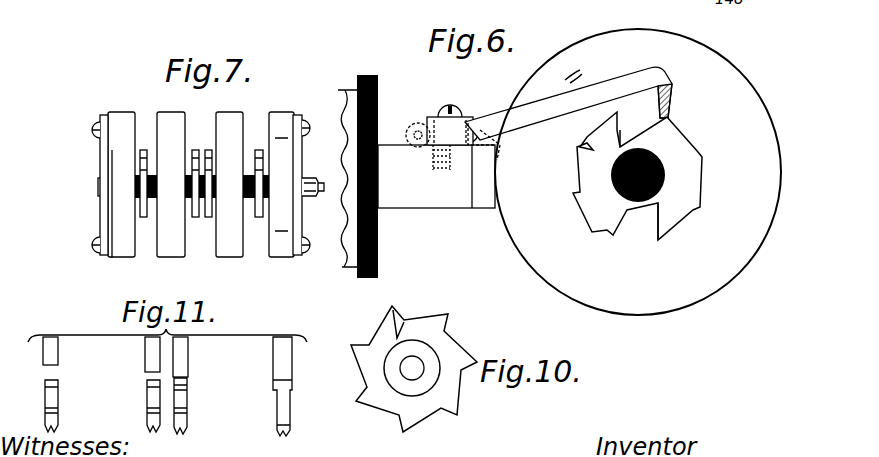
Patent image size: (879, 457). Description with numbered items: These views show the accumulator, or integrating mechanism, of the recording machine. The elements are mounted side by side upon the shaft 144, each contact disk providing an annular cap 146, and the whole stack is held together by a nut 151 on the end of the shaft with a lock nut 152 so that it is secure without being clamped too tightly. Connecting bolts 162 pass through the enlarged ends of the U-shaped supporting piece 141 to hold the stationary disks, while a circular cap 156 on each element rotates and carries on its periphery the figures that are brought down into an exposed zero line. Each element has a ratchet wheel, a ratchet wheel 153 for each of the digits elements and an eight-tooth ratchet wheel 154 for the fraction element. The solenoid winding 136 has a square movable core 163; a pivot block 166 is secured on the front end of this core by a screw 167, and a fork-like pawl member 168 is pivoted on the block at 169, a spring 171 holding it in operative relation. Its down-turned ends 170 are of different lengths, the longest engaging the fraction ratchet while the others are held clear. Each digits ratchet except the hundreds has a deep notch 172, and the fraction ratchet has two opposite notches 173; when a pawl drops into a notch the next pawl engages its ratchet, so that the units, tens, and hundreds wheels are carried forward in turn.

In FIG. 6, the solenoid winding 136 is at (347, 88).
In FIG. 7, the U-shaped supporting piece 141 is at (101, 213).
In FIG. 7, the shaft 144 is at (99, 187).
In FIG. 6, the shaft 144 is at (665, 182).
In FIG. 7, the annular cap 146 is at (108, 148).
In FIG. 7, the nut 151 is at (308, 197).
In FIG. 7, the lock nut 152 is at (318, 185).
In FIG. 7, the ratchet wheel 153 is at (144, 150).
In FIG. 11, the ratchet wheel 153 is at (58, 417).
In FIG. 10, the ratchet wheel 153 is at (410, 425).
In FIG. 7, the ratchet wheel 154 is at (258, 217).
In FIG. 6, the ratchet wheel 154 is at (595, 207).
In FIG. 11, the ratchet wheel 154 is at (284, 407).
In FIG. 7, the circular cap 156 is at (112, 162).
In FIG. 6, the circular cap 156 is at (703, 60).
In FIG. 7, the connecting bolt 162 is at (96, 127).
In FIG. 6, the movable core 163 is at (429, 208).
In FIG. 6, the pivot block 166 is at (422, 123).
In FIG. 6, the screw 167 is at (455, 110).
In FIG. 6, the pawl member 168 is at (527, 115).
In FIG. 6, the pivot 169 is at (473, 210).
In FIG. 6, the down-turned end 170 is at (672, 85).
In FIG. 11, the down-turned end 170 is at (145, 352).
In FIG. 6, the spring 171 is at (512, 112).
In FIG. 10, the notch 172 is at (400, 320).
In FIG. 6, the notch 173 is at (629, 130).